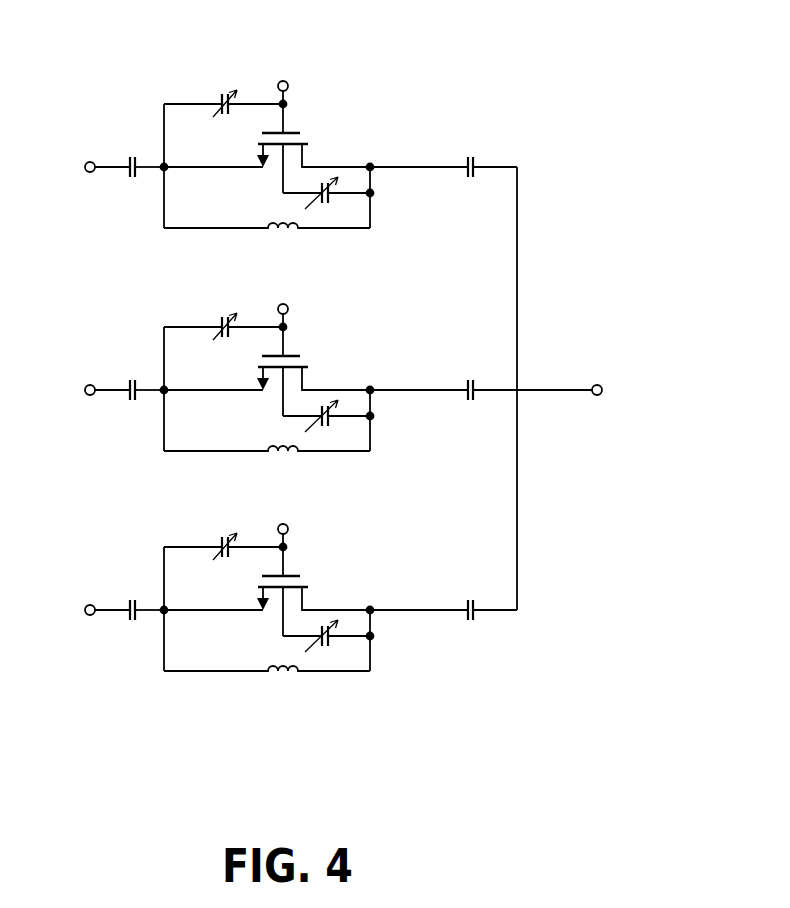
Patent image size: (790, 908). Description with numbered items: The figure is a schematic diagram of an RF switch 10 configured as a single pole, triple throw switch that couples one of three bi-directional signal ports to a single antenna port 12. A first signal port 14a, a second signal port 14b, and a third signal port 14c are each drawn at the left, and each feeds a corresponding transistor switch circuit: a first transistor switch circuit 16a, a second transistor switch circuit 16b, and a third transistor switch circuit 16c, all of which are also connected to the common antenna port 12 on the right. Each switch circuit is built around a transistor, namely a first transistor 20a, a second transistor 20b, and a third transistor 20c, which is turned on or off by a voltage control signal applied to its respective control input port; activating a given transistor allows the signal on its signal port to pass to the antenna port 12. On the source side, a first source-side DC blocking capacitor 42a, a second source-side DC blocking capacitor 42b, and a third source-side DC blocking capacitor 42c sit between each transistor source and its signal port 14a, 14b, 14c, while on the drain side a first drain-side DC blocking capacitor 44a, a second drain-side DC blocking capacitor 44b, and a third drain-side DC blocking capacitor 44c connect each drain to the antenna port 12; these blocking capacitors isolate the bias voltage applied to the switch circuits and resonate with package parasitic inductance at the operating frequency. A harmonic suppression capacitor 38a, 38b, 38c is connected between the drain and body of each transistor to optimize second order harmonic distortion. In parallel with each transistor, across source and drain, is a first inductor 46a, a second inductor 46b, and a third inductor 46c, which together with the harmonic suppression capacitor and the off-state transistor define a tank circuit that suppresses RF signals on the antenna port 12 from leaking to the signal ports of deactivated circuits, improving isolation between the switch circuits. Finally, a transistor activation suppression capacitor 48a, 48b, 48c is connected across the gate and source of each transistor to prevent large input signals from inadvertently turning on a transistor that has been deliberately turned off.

The RF switch 10 is at (598, 120).
The antenna port 12 is at (597, 383).
The first signal port 14a is at (101, 192).
The second signal port 14b is at (101, 415).
The third signal port 14c is at (101, 635).
The first transistor switch circuit 16a is at (271, 136).
The second transistor switch circuit 16b is at (271, 360).
The third transistor switch circuit 16c is at (271, 584).
The first transistor 20a is at (313, 158).
The second transistor 20b is at (313, 381).
The third transistor 20c is at (313, 601).
The harmonic suppression capacitor Cap_HD2 38a is at (352, 209).
The harmonic suppression capacitor Cap_HD2 38b is at (352, 432).
The harmonic suppression capacitor Cap_HD2 38c is at (351, 652).
The first source-side DC blocking capacitor 42a is at (130, 143).
The second source-side DC blocking capacitor 42b is at (130, 366).
The third source-side DC blocking capacitor 42c is at (131, 586).
The first drain-side DC blocking capacitor 44a is at (443, 150).
The second drain-side DC blocking capacitor 44b is at (443, 373).
The third drain-side DC blocking capacitor 44c is at (443, 593).
The first inductor 46a is at (267, 210).
The second inductor 46b is at (267, 433).
The third inductor 46c is at (267, 653).
The first transistor activation suppression capacitor Cgs_1dB 48a is at (210, 124).
The second transistor activation suppression capacitor Cgs_1dB 48b is at (210, 347).
The third transistor activation suppression capacitor Cgs_1dB 48c is at (211, 567).